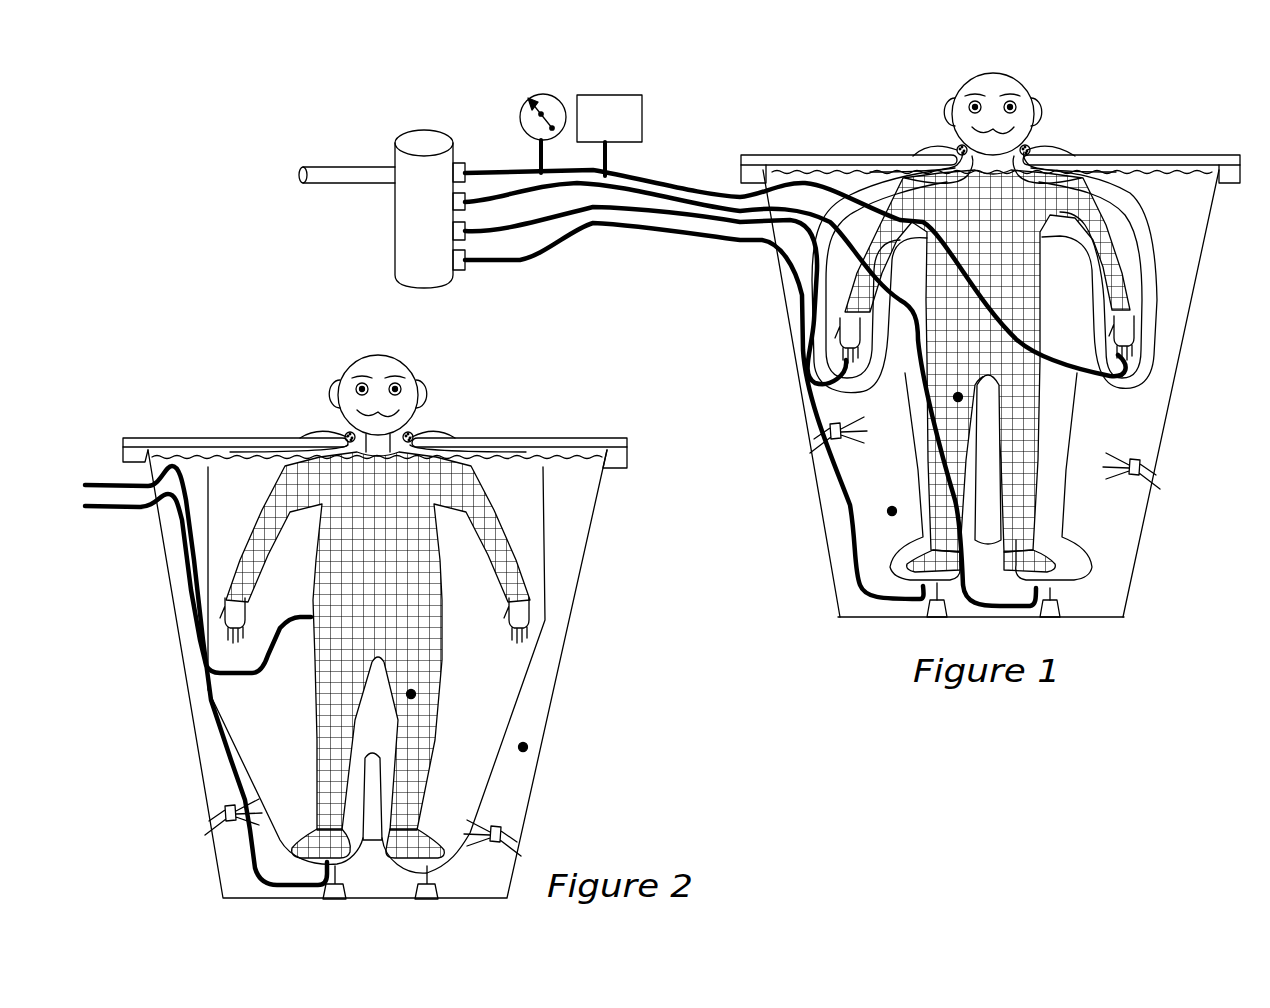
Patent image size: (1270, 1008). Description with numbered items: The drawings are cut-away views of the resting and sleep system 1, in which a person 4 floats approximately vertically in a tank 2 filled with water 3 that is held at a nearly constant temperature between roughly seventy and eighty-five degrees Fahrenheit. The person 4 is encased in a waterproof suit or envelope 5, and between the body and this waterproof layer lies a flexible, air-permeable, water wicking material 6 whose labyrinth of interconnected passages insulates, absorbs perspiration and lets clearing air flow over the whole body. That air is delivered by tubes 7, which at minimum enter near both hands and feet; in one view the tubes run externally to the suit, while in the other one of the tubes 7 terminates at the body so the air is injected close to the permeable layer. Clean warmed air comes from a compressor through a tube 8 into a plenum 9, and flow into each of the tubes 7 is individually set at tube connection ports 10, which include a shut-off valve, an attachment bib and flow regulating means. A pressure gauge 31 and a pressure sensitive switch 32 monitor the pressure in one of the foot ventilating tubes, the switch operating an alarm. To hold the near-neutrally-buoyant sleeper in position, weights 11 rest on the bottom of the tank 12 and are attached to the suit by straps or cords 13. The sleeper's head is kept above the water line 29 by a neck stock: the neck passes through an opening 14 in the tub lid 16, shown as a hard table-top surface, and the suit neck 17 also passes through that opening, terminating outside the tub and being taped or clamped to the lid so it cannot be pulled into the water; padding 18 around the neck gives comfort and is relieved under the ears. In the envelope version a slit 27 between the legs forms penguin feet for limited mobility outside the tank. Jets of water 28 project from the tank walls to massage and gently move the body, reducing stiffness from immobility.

In FIG. 1, the resting and sleep system 1 is at (745, 284).
In FIG. 2, the resting and sleep system 1 is at (594, 624).
In FIG. 1, the tank 2 is at (790, 322).
In FIG. 2, the tank 2 is at (547, 737).
In FIG. 1, the water 3 is at (888, 511).
In FIG. 2, the water 3 is at (524, 750).
In FIG. 1, the person 4 is at (1033, 90).
In FIG. 2, the person 4 is at (380, 353).
In FIG. 1, the waterproof suit or envelope 5 is at (1137, 250).
In FIG. 2, the waterproof suit or envelope 5 is at (543, 653).
In FIG. 1, the flexible air-permeable water wicking material 6 is at (953, 397).
In FIG. 2, the flexible air-permeable water wicking material 6 is at (416, 694).
In FIG. 1, the tubes 7 is at (712, 200).
In FIG. 2, the tubes 7 is at (133, 507).
In FIG. 1, the tube 8 is at (332, 163).
In FIG. 1, the plenum 9 is at (412, 133).
In FIG. 1, the tube connection ports 10 is at (462, 153).
In FIG. 1, the weights 11 is at (1062, 613).
In FIG. 2, the weights 11 is at (380, 882).
In FIG. 1, the bottom of the tank 12 is at (1100, 620).
In FIG. 1, the straps or cords 13 is at (1060, 587).
In FIG. 1, the opening 14 is at (940, 130).
In FIG. 1, the tub lid 16 is at (860, 157).
In FIG. 2, the tub lid 16 is at (170, 440).
In FIG. 1, the suit neck 17 is at (903, 150).
In FIG. 2, the suit neck 17 is at (440, 437).
In FIG. 1, the padding 18 is at (1033, 150).
In FIG. 2, the slit 27 is at (367, 800).
In FIG. 1, the jets of water 28 is at (828, 440).
In FIG. 2, the jets of water 28 is at (223, 800).
In FIG. 1, the water line 29 is at (1170, 160).
In FIG. 2, the water line 29 is at (193, 457).
In FIG. 1, the pressure gauge 31 is at (540, 88).
In FIG. 1, the pressure sensitive switch 32 is at (607, 93).